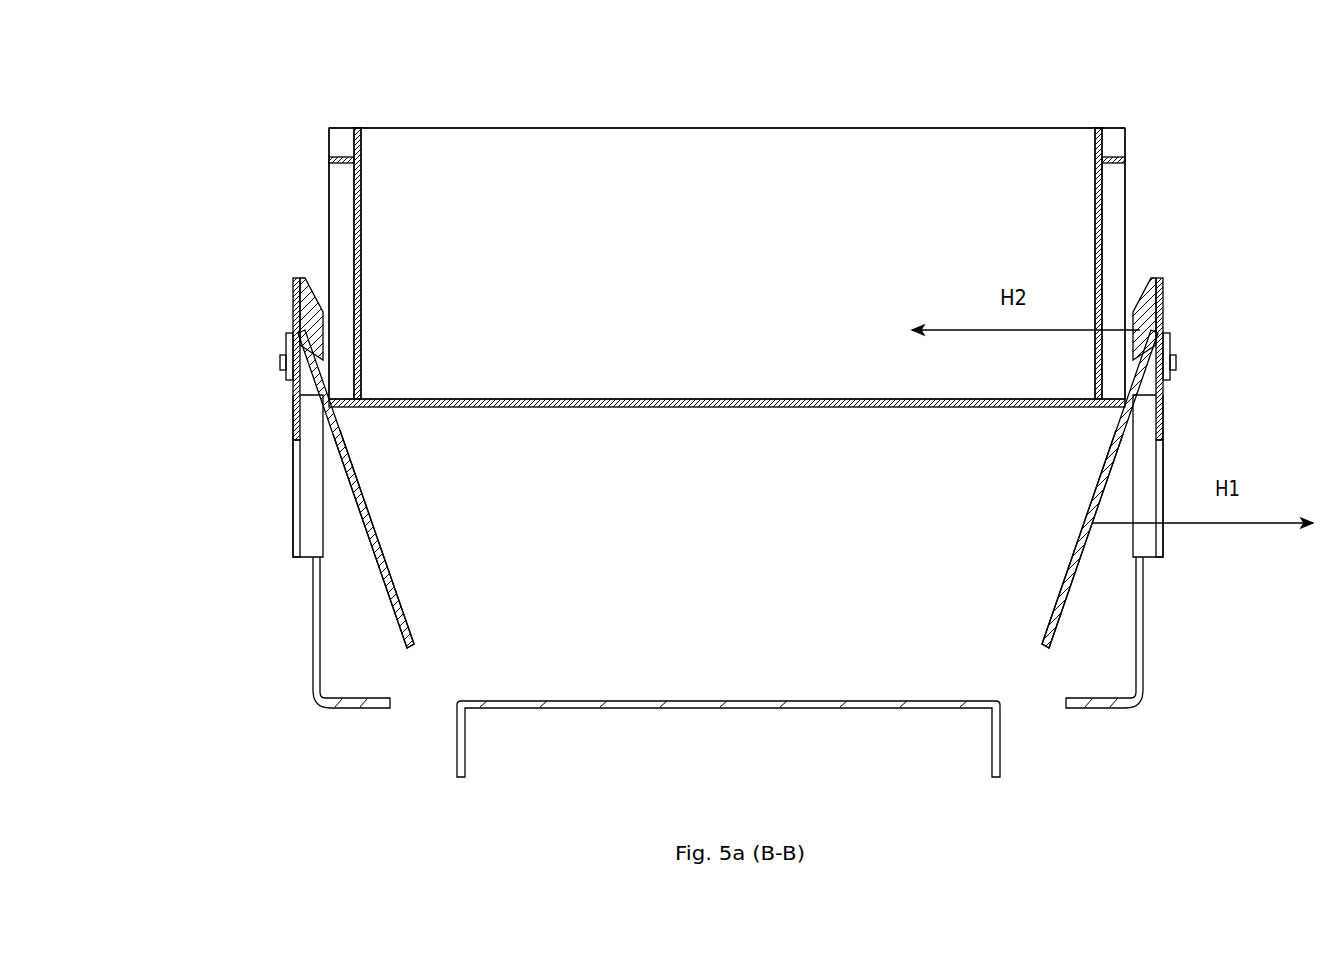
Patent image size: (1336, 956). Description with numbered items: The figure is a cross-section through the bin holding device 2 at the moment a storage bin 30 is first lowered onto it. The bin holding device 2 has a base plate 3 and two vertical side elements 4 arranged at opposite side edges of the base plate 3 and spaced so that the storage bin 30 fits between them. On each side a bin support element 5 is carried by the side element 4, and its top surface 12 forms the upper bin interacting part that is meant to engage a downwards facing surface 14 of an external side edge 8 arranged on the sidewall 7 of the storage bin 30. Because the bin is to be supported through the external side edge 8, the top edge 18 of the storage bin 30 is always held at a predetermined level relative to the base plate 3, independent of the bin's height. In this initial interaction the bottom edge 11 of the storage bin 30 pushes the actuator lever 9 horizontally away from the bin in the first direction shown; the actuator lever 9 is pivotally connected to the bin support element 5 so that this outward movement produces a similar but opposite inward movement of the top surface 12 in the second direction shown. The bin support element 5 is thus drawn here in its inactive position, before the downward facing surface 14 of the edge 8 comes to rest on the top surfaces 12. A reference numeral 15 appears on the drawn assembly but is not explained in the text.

The bin holding device 2 is at (748, 569).
The base plate 3 is at (890, 702).
The side element 4 is at (312, 607).
The bin support element 5 is at (317, 348).
The sidewall 7 is at (360, 275).
The external side edge 8 is at (330, 158).
The actuator lever 9 is at (387, 575).
The bottom edge 11 is at (330, 410).
The top surface 12 is at (300, 297).
The downwards facing surface 14 is at (354, 163).
The bracket 15 is at (297, 500).
The top edge 18 is at (612, 128).
The storage bin 30 is at (735, 276).